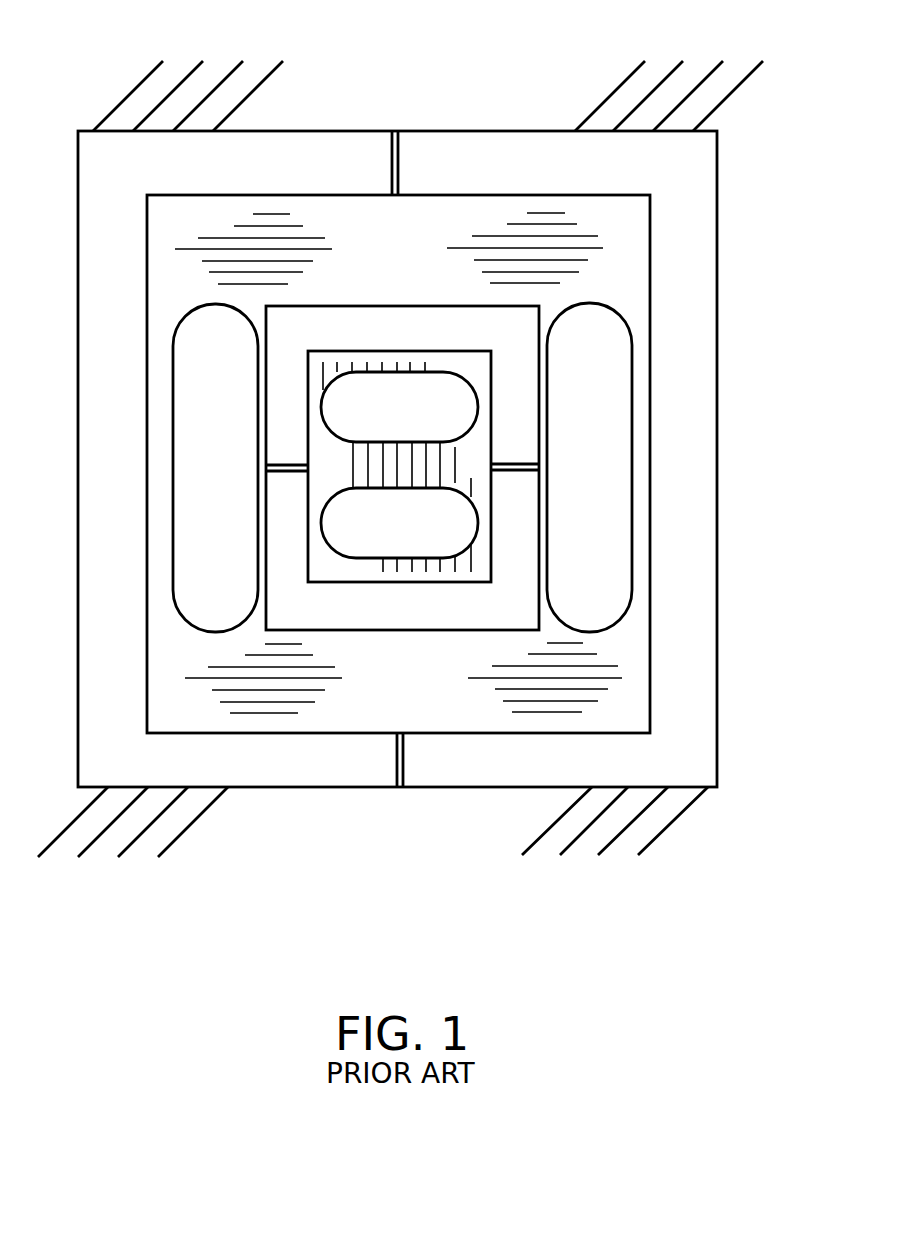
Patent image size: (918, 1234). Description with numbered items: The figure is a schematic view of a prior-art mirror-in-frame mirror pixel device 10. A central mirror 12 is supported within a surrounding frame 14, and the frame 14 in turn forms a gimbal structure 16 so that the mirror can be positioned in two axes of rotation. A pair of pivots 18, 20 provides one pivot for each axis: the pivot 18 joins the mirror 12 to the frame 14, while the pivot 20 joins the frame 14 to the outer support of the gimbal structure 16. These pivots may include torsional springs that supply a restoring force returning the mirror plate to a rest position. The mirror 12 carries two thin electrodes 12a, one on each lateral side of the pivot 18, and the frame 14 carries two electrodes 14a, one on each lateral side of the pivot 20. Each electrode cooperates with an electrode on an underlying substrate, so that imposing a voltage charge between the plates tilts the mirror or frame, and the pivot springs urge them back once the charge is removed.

The mirror pixel device 10 is at (782, 322).
The mirror 12 is at (455, 463).
The electrodes 12a is at (422, 418).
The frame 14 is at (622, 675).
The electrodes 14a is at (193, 469).
The gimbal structure 16 is at (719, 567).
The pivot 18 is at (290, 462).
The pivot 20 is at (398, 173).